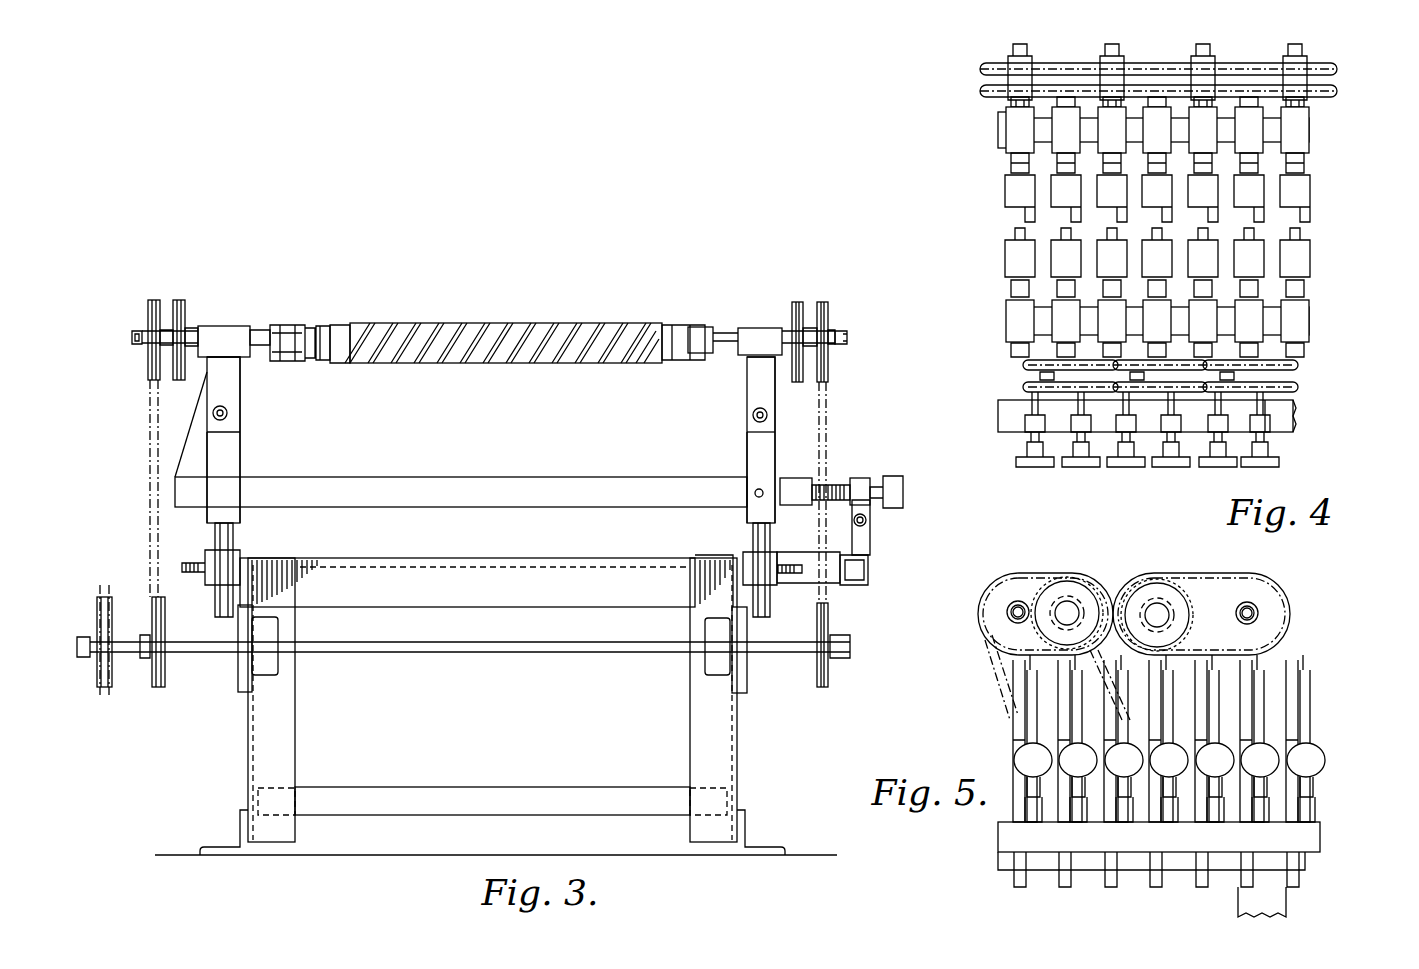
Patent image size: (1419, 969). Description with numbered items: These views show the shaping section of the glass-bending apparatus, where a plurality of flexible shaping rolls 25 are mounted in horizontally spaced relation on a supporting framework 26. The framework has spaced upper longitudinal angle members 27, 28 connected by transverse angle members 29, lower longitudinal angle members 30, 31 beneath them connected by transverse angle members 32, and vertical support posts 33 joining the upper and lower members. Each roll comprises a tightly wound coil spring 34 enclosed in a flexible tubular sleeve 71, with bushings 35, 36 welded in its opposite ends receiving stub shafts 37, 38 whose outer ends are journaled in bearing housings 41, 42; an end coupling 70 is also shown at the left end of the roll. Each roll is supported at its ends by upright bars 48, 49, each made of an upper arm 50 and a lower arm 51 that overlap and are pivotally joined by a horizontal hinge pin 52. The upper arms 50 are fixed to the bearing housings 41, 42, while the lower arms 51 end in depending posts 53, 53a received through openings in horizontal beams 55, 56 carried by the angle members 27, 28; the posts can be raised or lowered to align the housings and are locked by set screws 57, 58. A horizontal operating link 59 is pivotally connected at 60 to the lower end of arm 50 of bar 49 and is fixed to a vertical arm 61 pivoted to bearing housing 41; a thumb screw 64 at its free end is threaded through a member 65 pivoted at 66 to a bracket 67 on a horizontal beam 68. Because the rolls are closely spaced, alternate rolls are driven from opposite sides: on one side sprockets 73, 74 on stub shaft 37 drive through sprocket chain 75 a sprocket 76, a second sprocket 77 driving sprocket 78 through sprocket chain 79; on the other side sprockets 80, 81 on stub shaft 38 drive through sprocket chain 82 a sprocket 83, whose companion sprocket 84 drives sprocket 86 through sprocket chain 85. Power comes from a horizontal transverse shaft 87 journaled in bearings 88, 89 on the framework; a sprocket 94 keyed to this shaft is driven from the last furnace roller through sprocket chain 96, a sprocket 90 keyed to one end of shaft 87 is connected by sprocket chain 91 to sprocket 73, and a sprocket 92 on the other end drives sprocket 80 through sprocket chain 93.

In FIG. 3, the flexible shaping roll 25 is at (472, 322).
In FIG. 4, the flexible shaping roll 25 is at (1268, 240).
In FIG. 3, the supporting framework 26 is at (742, 735).
In FIG. 3, the upper longitudinally disposed angle member 27 is at (272, 558).
In FIG. 3, the upper longitudinally disposed angle member 28 is at (712, 556).
In FIG. 3, the transverse angle member 29 is at (468, 560).
In FIG. 3, the lower longitudinally disposed angle member 30 is at (262, 792).
In FIG. 3, the lower longitudinally disposed angle member 31 is at (722, 792).
In FIG. 3, the transverse angle member 32 is at (478, 800).
In FIG. 3, the vertical support post 33 is at (275, 725).
In FIG. 3, the coil spring 34 is at (337, 335).
In FIG. 3, the bushing 35 is at (280, 338).
In FIG. 3, the bushing 36 is at (700, 345).
In FIG. 3, the stub shaft 37 is at (132, 334).
In FIG. 4, the stub shaft 37 is at (1020, 48).
In FIG. 3, the stub shaft 38 is at (843, 345).
In FIG. 5, the stub shaft 38 is at (1016, 605).
In FIG. 3, the bearing housing 41 is at (225, 327).
In FIG. 4, the bearing housing 41 is at (1305, 130).
In FIG. 3, the bearing housing 42 is at (765, 328).
In FIG. 4, the bearing housing 42 is at (1298, 322).
In FIG. 3, the upright bar 48 is at (242, 441).
In FIG. 3, the upright bar 49 is at (745, 425).
In FIG. 5, the upright bar 49 is at (1262, 677).
In FIG. 3, the upper arm 50 is at (238, 368).
In FIG. 5, the upper arm 50 is at (1030, 690).
In FIG. 3, the lower arm 51 is at (240, 473).
In FIG. 5, the lower arm 51 is at (1018, 738).
In FIG. 3, the horizontal hinge pin 52 is at (228, 413).
In FIG. 3, the vertical depending post 53 is at (233, 545).
In FIG. 3, the vertical depending post 53a is at (752, 545).
In FIG. 5, the vertical depending post 53a is at (1024, 888).
In FIG. 4, the elongated horizontal beam 55 is at (1003, 130).
In FIG. 4, the elongated horizontal beam 56 is at (1010, 412).
In FIG. 5, the elongated horizontal beam 56 is at (1010, 840).
In FIG. 3, the set screw 57 is at (194, 575).
In FIG. 3, the set screw 58 is at (788, 578).
In FIG. 3, the horizontal operating link 59 is at (428, 492).
In FIG. 3, the pivot connection 60 is at (762, 489).
In FIG. 3, the vertical arm 61 is at (197, 453).
In FIG. 3, the thumb screw 64 is at (830, 485).
In FIG. 4, the thumb screw 64 is at (1280, 462).
In FIG. 5, the thumb screw 64 is at (1258, 753).
In FIG. 3, the pivoted member 65 is at (862, 480).
In FIG. 3, the pivot 66 is at (866, 522).
In FIG. 5, the pivot 66 is at (1026, 798).
In FIG. 3, the bracket 67 is at (866, 548).
In FIG. 3, the horizontal beam 68 is at (862, 582).
In FIG. 4, the horizontal beam 68 is at (1285, 410).
In FIG. 3, the coupling 70 is at (305, 300).
In FIG. 3, the flexible tubular sleeve 71 is at (538, 328).
In FIG. 3, the sprocket 73 is at (150, 302).
In FIG. 4, the sprocket 73 is at (985, 66).
In FIG. 5, the sprocket 73 is at (995, 610).
In FIG. 3, the sprocket 74 is at (178, 302).
In FIG. 4, the sprocket 74 is at (985, 90).
In FIG. 4, the sprocket chain 75 is at (1066, 85).
In FIG. 5, the sprocket chain 75 is at (1105, 575).
In FIG. 4, the sprocket 76 is at (1128, 92).
In FIG. 4, the sprocket 77 is at (1112, 62).
In FIG. 4, the sprocket 78 is at (1205, 70).
In FIG. 4, the sprocket chain 79 is at (1152, 70).
In FIG. 3, the sprocket 80 is at (823, 302).
In FIG. 4, the sprocket 80 is at (1035, 385).
In FIG. 5, the sprocket 80 is at (1050, 597).
In FIG. 3, the sprocket 81 is at (798, 302).
In FIG. 4, the sprocket 81 is at (1035, 365).
In FIG. 4, the sprocket chain 82 is at (1093, 375).
In FIG. 4, the sprocket 83 is at (1148, 375).
In FIG. 4, the sprocket 84 is at (1187, 388).
In FIG. 5, the sprocket 84 is at (1153, 590).
In FIG. 4, the sprocket chain 85 is at (1208, 393).
In FIG. 5, the sprocket chain 85 is at (1205, 575).
In FIG. 4, the sprocket 86 is at (1285, 375).
In FIG. 5, the sprocket 86 is at (1270, 625).
In FIG. 3, the horizontal transverse shaft 87 is at (500, 655).
In FIG. 3, the bearing 88 is at (265, 637).
In FIG. 3, the bearing 89 is at (712, 633).
In FIG. 3, the sprocket 90 is at (160, 687).
In FIG. 3, the sprocket chain 91 is at (150, 485).
In FIG. 5, the sprocket chain 91 is at (985, 645).
In FIG. 3, the sprocket 92 is at (825, 688).
In FIG. 3, the sprocket chain 93 is at (830, 418).
In FIG. 5, the sprocket chain 93 is at (1105, 662).
In FIG. 3, the pulley 94 is at (105, 687).
In FIG. 3, the sprocket chain 96 is at (98, 597).